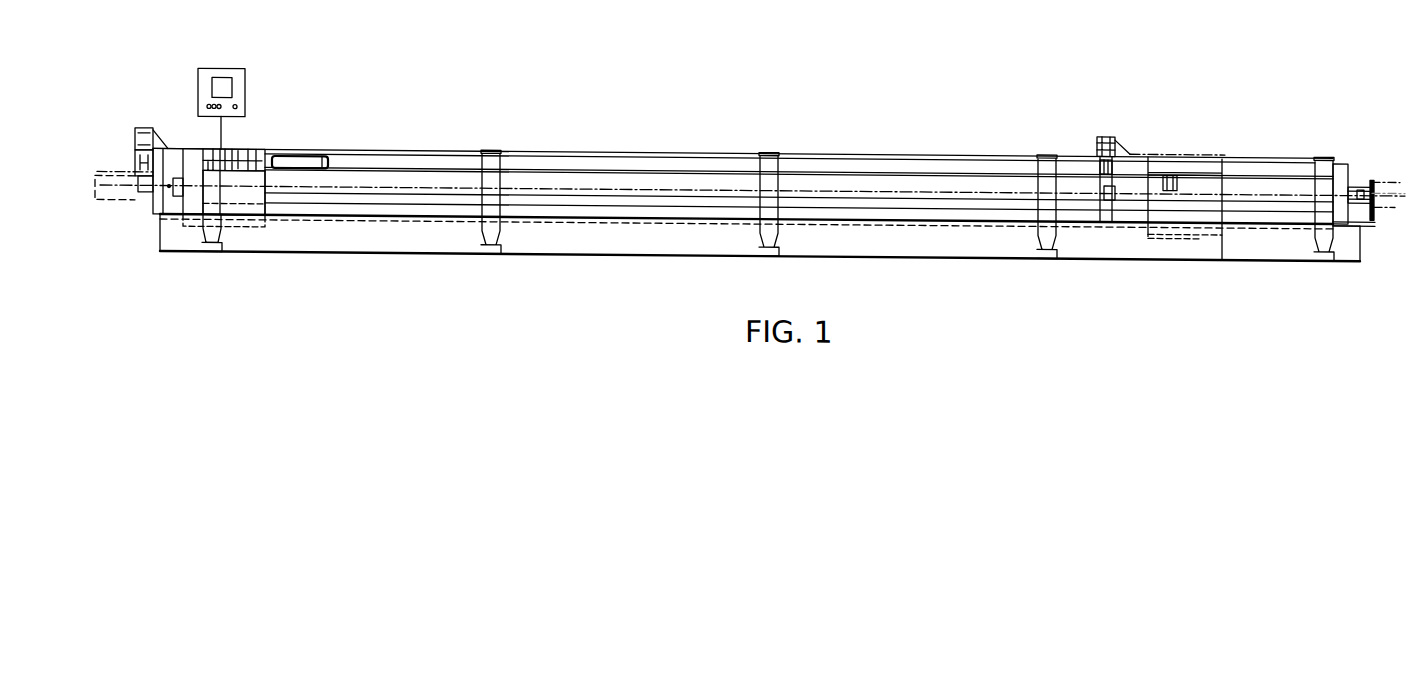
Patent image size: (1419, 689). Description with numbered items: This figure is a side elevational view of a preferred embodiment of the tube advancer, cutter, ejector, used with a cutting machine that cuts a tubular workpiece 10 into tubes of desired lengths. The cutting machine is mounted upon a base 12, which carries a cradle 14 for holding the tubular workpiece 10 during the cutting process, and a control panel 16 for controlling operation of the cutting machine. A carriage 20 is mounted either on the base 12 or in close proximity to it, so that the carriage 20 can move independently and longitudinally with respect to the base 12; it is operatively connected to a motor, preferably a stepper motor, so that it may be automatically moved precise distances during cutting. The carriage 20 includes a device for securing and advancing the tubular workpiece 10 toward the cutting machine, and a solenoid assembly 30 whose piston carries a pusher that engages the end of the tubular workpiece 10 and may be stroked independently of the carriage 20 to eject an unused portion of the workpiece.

The tubular workpiece 10 is at (123, 197).
The base 12 is at (720, 246).
The cradle 14 is at (630, 205).
The control panel 16 is at (237, 88).
The carriage 20 is at (249, 236).
The solenoid assembly 30 is at (264, 158).